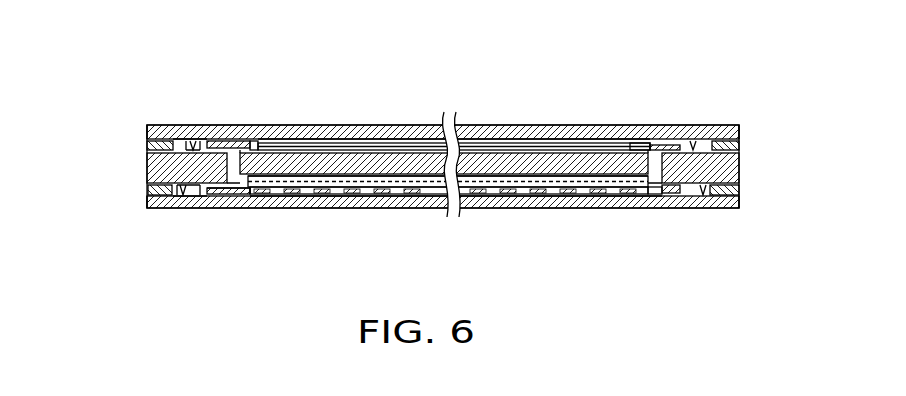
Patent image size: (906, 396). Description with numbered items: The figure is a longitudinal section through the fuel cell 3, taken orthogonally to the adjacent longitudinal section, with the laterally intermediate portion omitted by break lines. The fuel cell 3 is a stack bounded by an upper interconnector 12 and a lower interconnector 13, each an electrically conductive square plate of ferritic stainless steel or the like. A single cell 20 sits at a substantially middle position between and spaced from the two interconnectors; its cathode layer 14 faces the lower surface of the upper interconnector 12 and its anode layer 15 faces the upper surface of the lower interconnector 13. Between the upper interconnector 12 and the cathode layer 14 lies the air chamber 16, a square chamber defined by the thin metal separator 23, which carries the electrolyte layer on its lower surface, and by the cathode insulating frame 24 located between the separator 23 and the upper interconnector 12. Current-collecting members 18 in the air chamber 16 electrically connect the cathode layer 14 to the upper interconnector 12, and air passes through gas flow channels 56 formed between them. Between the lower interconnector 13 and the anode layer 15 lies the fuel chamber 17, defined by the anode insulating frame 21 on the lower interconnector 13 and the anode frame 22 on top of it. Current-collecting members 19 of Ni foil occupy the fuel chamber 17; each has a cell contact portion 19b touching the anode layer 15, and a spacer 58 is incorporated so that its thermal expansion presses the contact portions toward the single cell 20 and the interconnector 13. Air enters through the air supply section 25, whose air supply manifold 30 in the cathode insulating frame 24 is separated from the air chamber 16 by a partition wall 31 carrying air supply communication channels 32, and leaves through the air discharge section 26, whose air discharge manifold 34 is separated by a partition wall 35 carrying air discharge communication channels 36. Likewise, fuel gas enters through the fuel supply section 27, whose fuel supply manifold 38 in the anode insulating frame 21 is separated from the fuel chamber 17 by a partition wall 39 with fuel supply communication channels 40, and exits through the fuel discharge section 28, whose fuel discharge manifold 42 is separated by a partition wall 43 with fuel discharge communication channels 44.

The fuel cell 3 is at (565, 102).
The upper interconnector 12 is at (480, 127).
The lower interconnector 13 is at (572, 208).
The cathode layer 14 is at (421, 150).
The anode layer 15 is at (505, 187).
The air chamber 16 is at (389, 158).
The fuel chamber 17 is at (393, 187).
The current-collecting members 18 is at (333, 143).
The current-collecting members 19 is at (310, 195).
The cell contact portion 19b is at (278, 195).
The single cell 20 is at (278, 152).
The anode insulating frame 21 is at (147, 204).
The anode frame 22 is at (200, 196).
The separator 23 is at (147, 133).
The cathode insulating frame 24 is at (739, 132).
The air supply section 25 is at (695, 140).
The air discharge section 26 is at (193, 140).
The fuel supply section 27 is at (712, 208).
The fuel discharge section 28 is at (176, 196).
The air supply manifold 30 is at (718, 141).
The partition wall 31 is at (647, 144).
The air supply communication channels 32 is at (664, 145).
The air discharge manifold 34 is at (168, 141).
The partition wall 35 is at (202, 142).
The air discharge communication channels 36 is at (231, 141).
The fuel supply manifold 38 is at (688, 196).
The partition wall 39 is at (668, 196).
The fuel supply communication channels 40 is at (652, 196).
The fuel discharge manifold 42 is at (184, 196).
The partition wall 43 is at (217, 196).
The fuel discharge communication channels 44 is at (233, 196).
The gas flow channels 56 is at (517, 143).
The spacer 58 is at (545, 196).